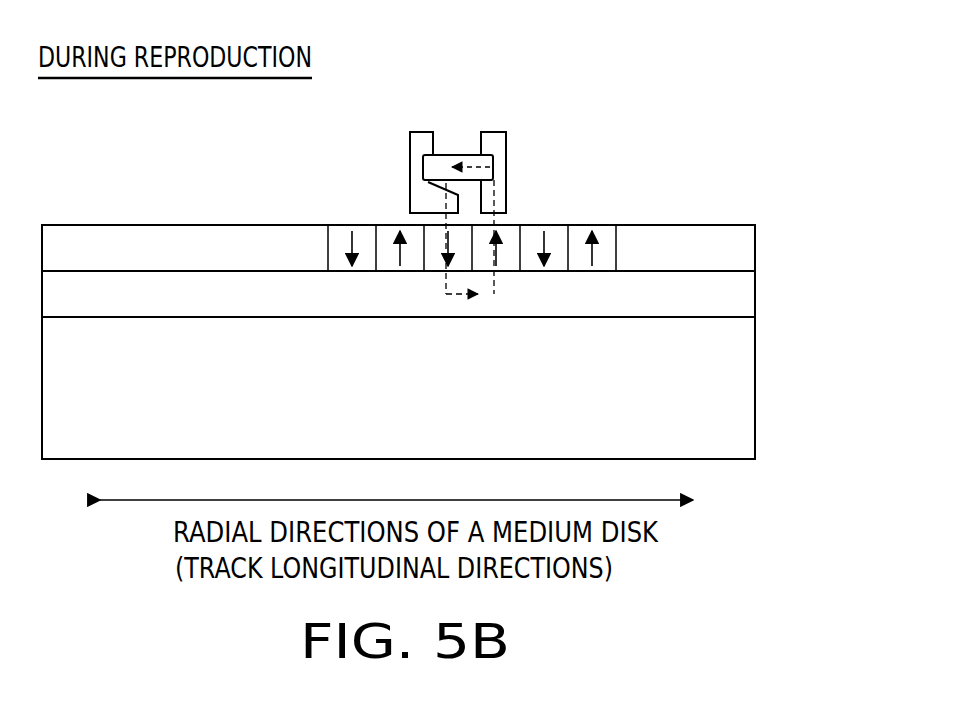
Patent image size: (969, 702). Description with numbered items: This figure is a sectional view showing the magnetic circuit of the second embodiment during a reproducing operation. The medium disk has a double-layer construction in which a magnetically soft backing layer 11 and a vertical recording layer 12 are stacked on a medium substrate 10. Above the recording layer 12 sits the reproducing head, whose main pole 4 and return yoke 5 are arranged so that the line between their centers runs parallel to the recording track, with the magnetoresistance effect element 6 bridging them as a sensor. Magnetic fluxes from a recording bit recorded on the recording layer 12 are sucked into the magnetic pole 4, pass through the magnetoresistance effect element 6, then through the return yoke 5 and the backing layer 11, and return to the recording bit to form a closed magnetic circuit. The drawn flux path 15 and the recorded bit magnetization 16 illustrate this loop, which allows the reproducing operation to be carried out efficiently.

The main pole 4 is at (500, 150).
The return yoke 5 is at (410, 140).
The magnetoresistance effect element 6 is at (455, 158).
The medium substrate 10 is at (745, 406).
The magnetically soft backing layer 11 is at (745, 298).
The vertical recording layer 12 is at (745, 251).
The magnetic flux path 15 is at (496, 294).
The recorded magnetization 16 is at (350, 258).